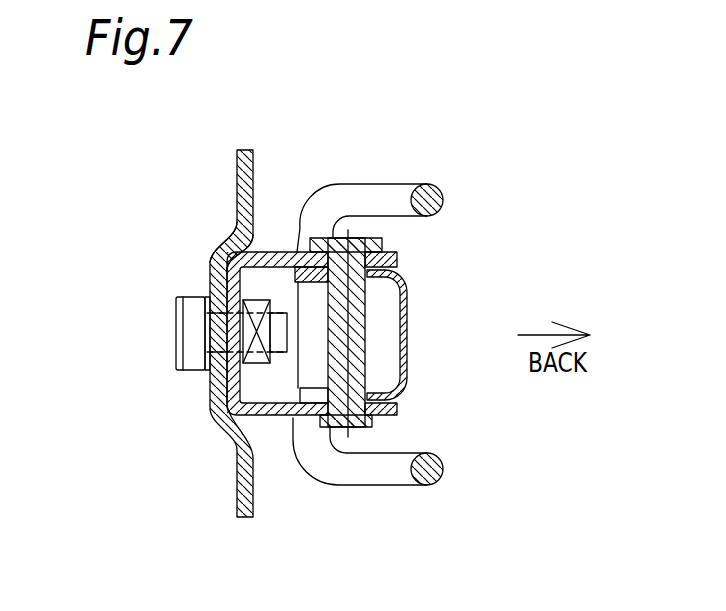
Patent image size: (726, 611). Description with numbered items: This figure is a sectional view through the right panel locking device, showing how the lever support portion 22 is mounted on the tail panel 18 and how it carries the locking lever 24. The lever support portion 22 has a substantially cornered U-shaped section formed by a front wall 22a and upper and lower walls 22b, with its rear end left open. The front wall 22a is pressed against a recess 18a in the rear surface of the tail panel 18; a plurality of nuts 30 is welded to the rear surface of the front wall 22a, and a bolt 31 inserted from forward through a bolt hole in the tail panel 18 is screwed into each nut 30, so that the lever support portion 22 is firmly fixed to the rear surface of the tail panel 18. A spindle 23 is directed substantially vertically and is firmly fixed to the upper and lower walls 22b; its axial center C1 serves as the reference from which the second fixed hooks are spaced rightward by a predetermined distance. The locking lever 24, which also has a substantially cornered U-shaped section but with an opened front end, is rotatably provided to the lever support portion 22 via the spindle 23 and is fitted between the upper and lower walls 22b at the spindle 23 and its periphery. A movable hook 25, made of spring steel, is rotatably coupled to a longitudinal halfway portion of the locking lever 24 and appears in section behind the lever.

The tail panel 18 is at (246, 188).
The recess 18a is at (233, 302).
The nut 30 is at (220, 258).
The bolt 31 is at (186, 340).
The lever support portion 22 is at (269, 335).
The front wall 22a is at (237, 377).
The upper and lower walls 22b is at (274, 252).
The spindle 23 is at (356, 362).
The locking lever 24 is at (406, 337).
The movable hook 25 is at (377, 200).
The axial center C1 is at (343, 303).